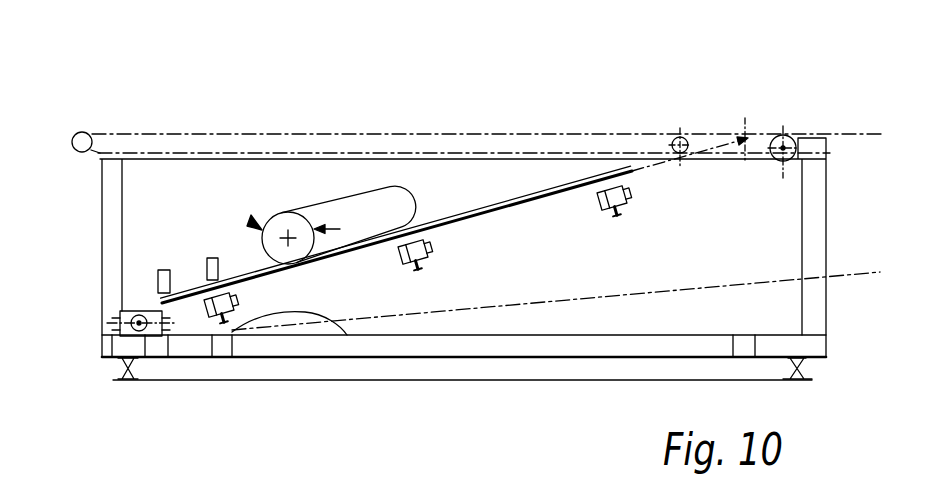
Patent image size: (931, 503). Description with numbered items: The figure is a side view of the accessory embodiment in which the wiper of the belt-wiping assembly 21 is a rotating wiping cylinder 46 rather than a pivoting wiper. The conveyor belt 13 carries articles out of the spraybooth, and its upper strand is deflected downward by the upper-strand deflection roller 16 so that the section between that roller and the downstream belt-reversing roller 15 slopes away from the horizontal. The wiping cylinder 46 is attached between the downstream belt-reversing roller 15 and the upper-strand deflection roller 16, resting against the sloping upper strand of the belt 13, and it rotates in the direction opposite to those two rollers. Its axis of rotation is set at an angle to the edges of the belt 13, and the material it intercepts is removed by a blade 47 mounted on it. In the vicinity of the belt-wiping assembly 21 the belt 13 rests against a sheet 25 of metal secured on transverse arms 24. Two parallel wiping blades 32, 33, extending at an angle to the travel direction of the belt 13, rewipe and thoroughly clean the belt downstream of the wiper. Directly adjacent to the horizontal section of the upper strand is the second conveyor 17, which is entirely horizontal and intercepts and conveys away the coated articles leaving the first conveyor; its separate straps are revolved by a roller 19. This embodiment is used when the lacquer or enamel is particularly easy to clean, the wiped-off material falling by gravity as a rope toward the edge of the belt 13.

The belt 13 is at (838, 134).
The downstream belt-reversing roller 15 is at (112, 352).
The upper-strand deflection roller 16 is at (783, 135).
The conveyor 17 is at (372, 136).
The roller 19 is at (82, 132).
The belt-wiping assembly 21 is at (386, 188).
The transverse arms 24 is at (600, 214).
The sheet 25 is at (458, 222).
The wiping blade 32 is at (212, 258).
The wiping blade 33 is at (163, 270).
The wiping cylinder 46 is at (290, 212).
The blade 47 is at (250, 220).